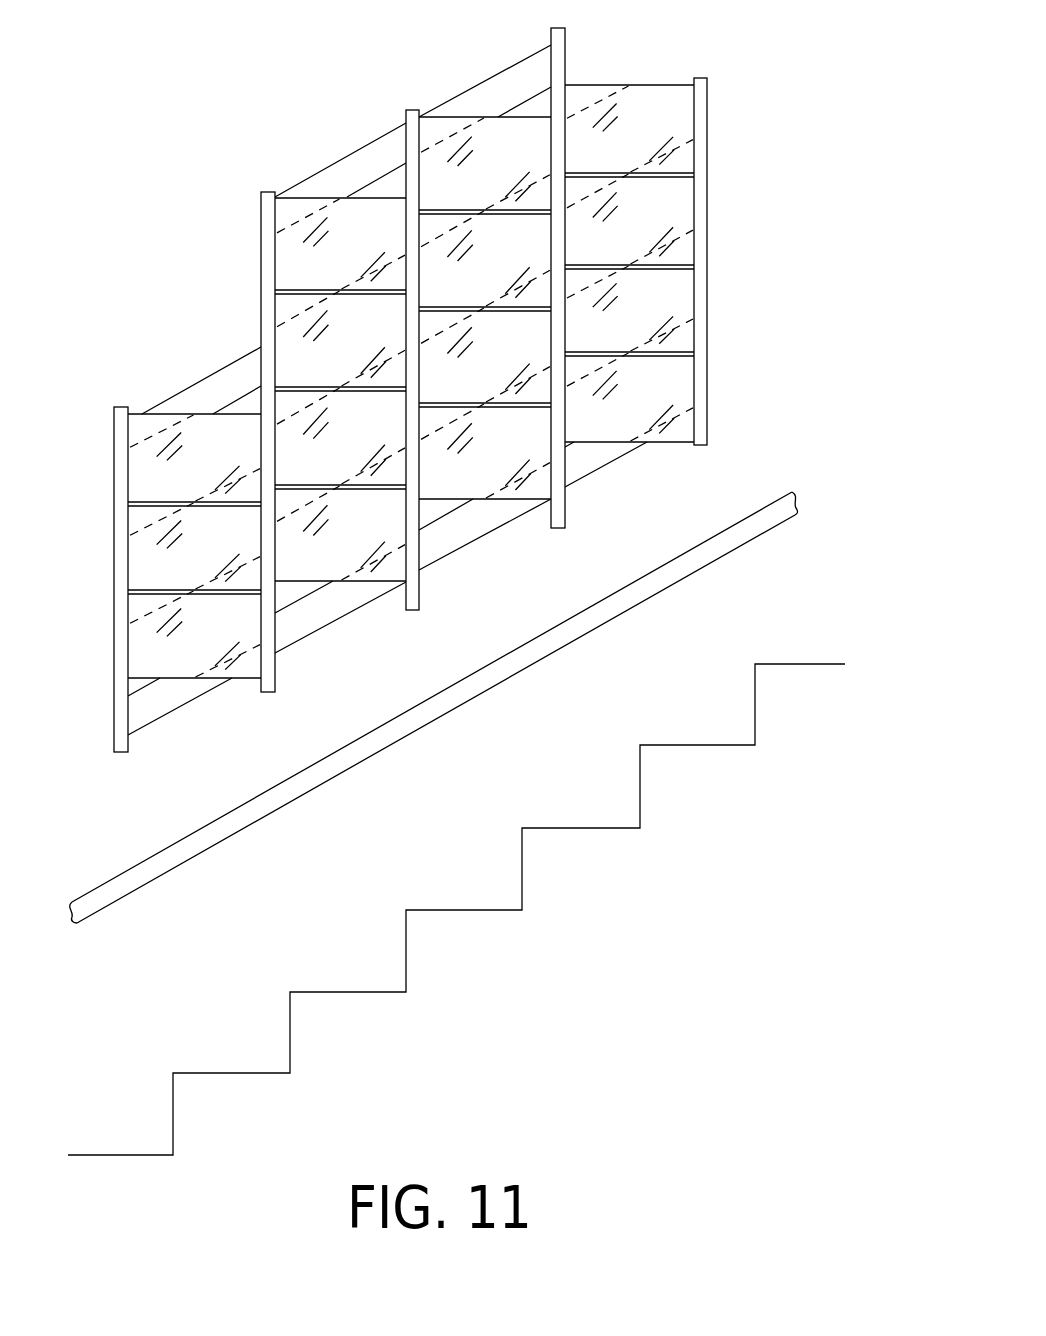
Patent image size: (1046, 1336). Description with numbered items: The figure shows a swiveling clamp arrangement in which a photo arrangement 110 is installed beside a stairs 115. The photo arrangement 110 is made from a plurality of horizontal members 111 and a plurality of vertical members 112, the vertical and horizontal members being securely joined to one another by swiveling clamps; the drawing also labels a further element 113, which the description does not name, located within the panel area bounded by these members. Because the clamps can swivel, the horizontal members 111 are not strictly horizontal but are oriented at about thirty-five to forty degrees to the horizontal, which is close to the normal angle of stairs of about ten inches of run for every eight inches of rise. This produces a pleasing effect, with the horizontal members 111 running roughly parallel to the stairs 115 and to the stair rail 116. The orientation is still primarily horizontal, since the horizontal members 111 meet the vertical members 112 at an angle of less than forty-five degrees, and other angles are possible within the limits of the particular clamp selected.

The photo arrangement 110 is at (468, 390).
The horizontal members 111 is at (222, 367).
The vertical members 112 is at (260, 263).
The panel 113 is at (195, 448).
The stairs 115 is at (812, 565).
The stair rail 116 is at (730, 525).